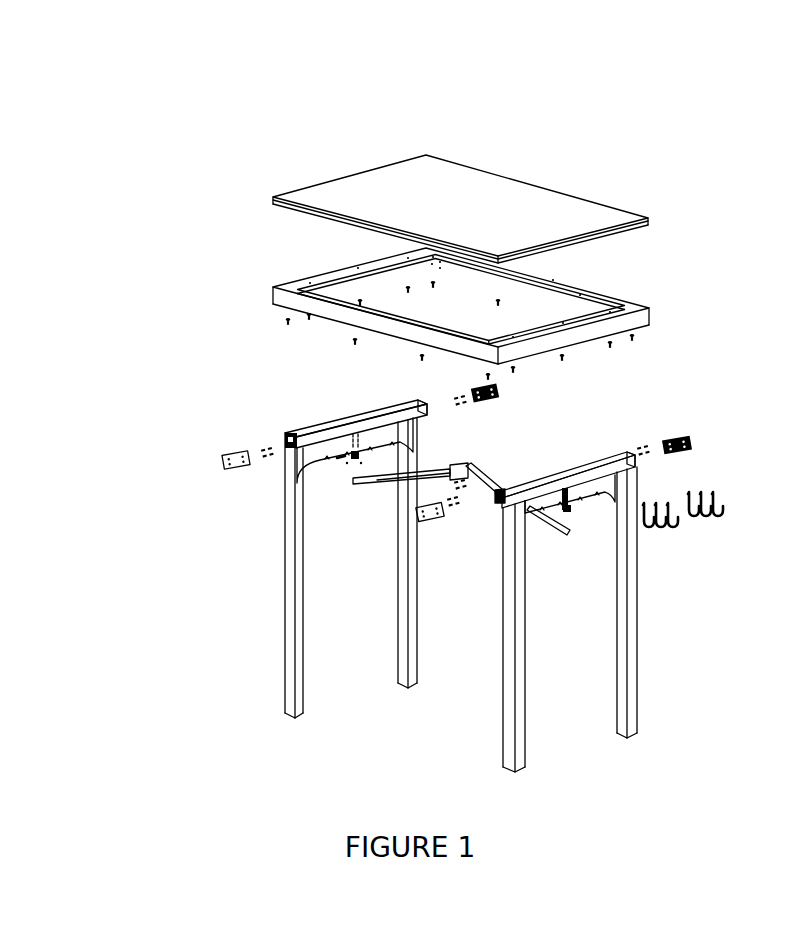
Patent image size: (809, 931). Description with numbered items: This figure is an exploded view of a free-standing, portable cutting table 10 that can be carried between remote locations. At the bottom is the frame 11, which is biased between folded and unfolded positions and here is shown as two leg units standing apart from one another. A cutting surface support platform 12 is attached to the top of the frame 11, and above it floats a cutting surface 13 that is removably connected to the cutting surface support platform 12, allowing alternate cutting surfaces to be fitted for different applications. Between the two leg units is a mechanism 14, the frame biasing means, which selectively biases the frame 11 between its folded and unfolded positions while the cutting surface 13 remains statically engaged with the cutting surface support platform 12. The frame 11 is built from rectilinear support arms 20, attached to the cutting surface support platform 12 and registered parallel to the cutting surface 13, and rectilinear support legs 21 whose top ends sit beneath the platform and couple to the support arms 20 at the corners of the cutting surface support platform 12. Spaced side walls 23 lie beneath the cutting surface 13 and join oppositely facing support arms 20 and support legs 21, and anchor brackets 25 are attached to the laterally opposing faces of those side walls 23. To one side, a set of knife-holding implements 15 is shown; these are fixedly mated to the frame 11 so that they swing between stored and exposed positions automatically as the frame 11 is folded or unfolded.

The portable cutting table 10 is at (690, 238).
The frame 11 is at (445, 630).
The cutting surface support platform 12 is at (302, 268).
The cutting surface 13 is at (462, 187).
The mechanism 14 is at (488, 465).
The knife-holding implements 15 is at (690, 530).
The rectilinear support arms 20 is at (347, 417).
The rectilinear support legs 21 is at (407, 518).
The side walls 23 is at (317, 448).
The anchor brackets 25 is at (357, 462).